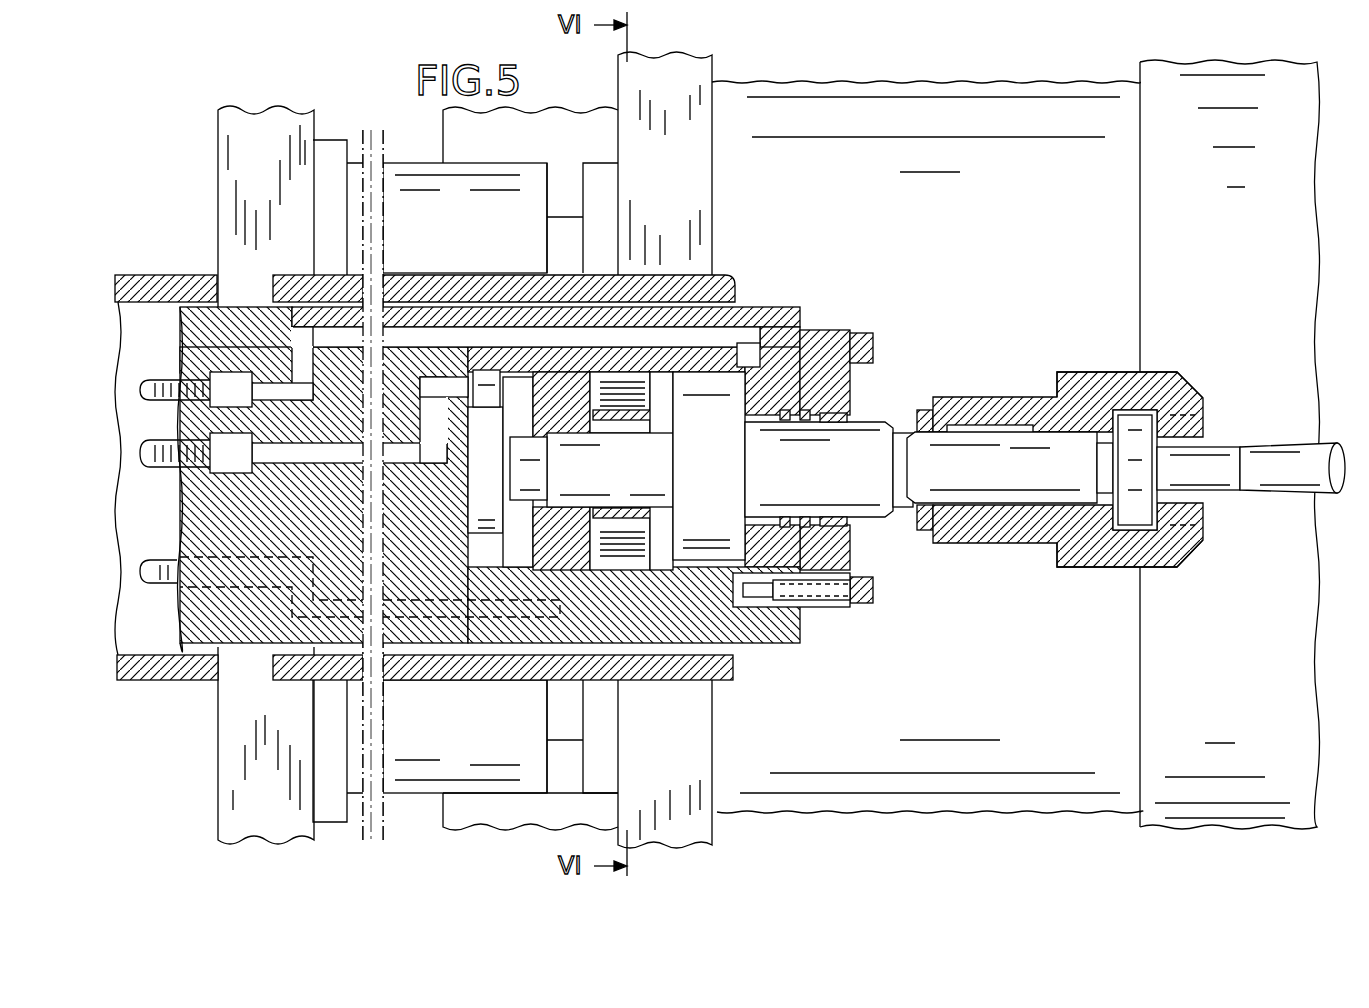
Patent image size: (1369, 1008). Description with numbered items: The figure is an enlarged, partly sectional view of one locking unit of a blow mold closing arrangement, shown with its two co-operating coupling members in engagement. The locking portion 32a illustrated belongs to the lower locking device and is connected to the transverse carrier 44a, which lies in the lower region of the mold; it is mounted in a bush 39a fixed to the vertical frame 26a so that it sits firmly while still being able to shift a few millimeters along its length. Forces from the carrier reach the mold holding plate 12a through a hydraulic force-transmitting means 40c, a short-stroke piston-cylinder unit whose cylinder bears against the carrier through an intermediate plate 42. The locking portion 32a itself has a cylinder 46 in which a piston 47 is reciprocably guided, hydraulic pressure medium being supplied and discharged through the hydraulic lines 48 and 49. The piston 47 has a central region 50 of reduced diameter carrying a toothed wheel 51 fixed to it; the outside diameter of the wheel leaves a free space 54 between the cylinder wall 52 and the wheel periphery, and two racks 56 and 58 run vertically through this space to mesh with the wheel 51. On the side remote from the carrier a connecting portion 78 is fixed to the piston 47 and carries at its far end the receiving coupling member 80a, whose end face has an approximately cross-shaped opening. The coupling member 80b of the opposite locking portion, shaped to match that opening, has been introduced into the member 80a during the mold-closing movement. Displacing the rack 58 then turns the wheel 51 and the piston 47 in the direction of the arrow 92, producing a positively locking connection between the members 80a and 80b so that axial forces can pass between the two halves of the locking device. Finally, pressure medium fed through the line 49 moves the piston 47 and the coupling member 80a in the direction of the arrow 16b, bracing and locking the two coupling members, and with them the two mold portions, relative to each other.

The mold holding plate 12a is at (705, 67).
The intermediate plate 42 is at (255, 120).
The force-transmitting means 40c is at (398, 180).
The vertical frame 26a is at (567, 130).
The transverse carrier 44a is at (148, 285).
The bush 39a is at (730, 290).
The wall of the cylinder 52 is at (665, 372).
The toothed wheel 51 is at (556, 620).
The hydraulic line 49 is at (148, 385).
The hydraulic line 48 is at (150, 468).
The cylinder 46 is at (515, 400).
The rack 56 is at (560, 370).
The rack 58 is at (625, 545).
The free space 54 is at (661, 397).
The central region 50 is at (590, 486).
The arrow 16b is at (706, 472).
The connecting portion 78 is at (848, 440).
The piston 47 is at (750, 640).
The locking portion 32a is at (995, 530).
The receiving coupling member 80a is at (1180, 385).
The arrow 92 is at (862, 462).
The coupling member 80b is at (1140, 510).